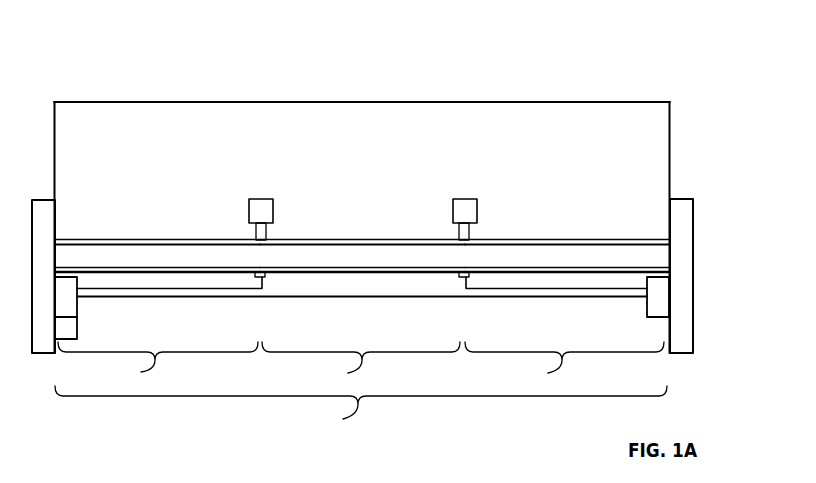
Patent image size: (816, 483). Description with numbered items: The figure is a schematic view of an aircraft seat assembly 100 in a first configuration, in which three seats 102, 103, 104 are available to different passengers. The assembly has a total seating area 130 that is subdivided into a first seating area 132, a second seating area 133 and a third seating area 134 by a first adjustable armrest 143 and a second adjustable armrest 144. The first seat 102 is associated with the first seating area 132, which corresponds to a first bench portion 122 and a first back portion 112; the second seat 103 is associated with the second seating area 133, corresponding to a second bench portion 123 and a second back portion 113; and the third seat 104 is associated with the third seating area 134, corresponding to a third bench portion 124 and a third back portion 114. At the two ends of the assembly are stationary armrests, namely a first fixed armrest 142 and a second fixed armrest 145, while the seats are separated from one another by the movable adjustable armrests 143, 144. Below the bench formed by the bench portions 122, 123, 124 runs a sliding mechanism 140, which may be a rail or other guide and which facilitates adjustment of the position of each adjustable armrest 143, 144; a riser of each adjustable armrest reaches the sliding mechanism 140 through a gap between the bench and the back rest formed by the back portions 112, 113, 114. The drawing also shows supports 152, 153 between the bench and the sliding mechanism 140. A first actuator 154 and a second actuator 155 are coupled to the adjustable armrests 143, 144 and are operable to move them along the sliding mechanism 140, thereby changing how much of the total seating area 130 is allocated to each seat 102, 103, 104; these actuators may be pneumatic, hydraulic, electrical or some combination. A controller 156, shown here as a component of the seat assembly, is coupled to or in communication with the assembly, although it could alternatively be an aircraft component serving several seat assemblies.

The aircraft seat assembly 100 is at (98, 27).
The first seat 102 is at (146, 78).
The second seat 103 is at (352, 76).
The third seat 104 is at (553, 76).
The first back portion 112 is at (174, 166).
The second back portion 113 is at (378, 167).
The third back portion 114 is at (583, 167).
The first bench portion 122 is at (175, 266).
The second bench portion 123 is at (380, 266).
The third bench portion 124 is at (583, 266).
The total seating area 130 is at (361, 409).
The first seating area 132 is at (158, 366).
The second seating area 133 is at (361, 365).
The third seating area 134 is at (564, 366).
The sliding mechanism 140 is at (424, 297).
The first fixed armrest 142 is at (57, 215).
The first adjustable armrest 143 is at (249, 199).
The second adjustable armrest 144 is at (459, 199).
The second fixed armrest 145 is at (669, 213).
The first support bracket 152 is at (185, 289).
The second support bracket 153 is at (570, 289).
The first actuator 154 is at (78, 311).
The second actuator 155 is at (647, 315).
The controller 156 is at (78, 333).